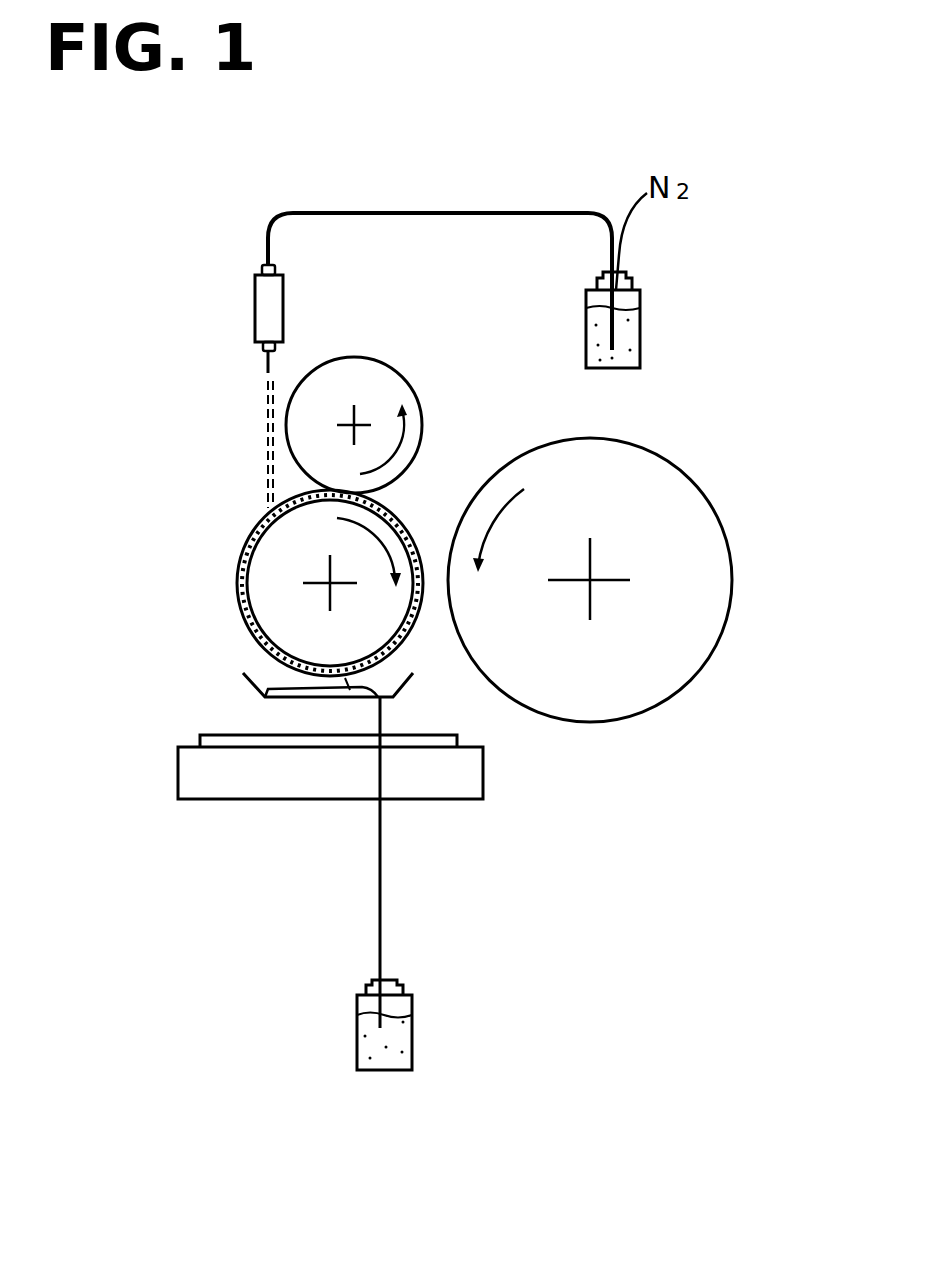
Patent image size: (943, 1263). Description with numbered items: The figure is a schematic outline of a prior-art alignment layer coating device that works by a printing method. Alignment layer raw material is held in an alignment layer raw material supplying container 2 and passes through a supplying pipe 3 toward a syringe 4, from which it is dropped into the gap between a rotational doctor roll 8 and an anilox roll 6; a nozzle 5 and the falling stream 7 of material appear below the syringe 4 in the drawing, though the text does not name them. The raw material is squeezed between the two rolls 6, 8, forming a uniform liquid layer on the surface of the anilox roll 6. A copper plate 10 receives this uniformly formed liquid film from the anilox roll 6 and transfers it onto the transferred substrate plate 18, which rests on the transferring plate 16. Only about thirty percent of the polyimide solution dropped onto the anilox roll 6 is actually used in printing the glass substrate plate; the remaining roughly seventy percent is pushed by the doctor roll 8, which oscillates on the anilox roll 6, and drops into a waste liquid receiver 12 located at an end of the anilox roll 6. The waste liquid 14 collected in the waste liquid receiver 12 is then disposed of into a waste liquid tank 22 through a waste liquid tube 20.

The alignment layer raw material supplying container 2 is at (640, 340).
The supplying pipe 3 is at (460, 211).
The syringe 4 is at (265, 313).
The nozzle 5 is at (268, 367).
The anilox roll 6 is at (275, 546).
The gas stream 7 is at (272, 427).
The rotational doctor roll 8 is at (380, 375).
The copper plate 10 is at (733, 585).
The waste liquid receiver 12 is at (248, 688).
The waste liquid 14 is at (265, 685).
The transferring plate 16 is at (220, 783).
The transferred substrate plate 18 is at (433, 735).
The waste liquid tube 20 is at (380, 870).
The waste liquid tank 22 is at (400, 1035).